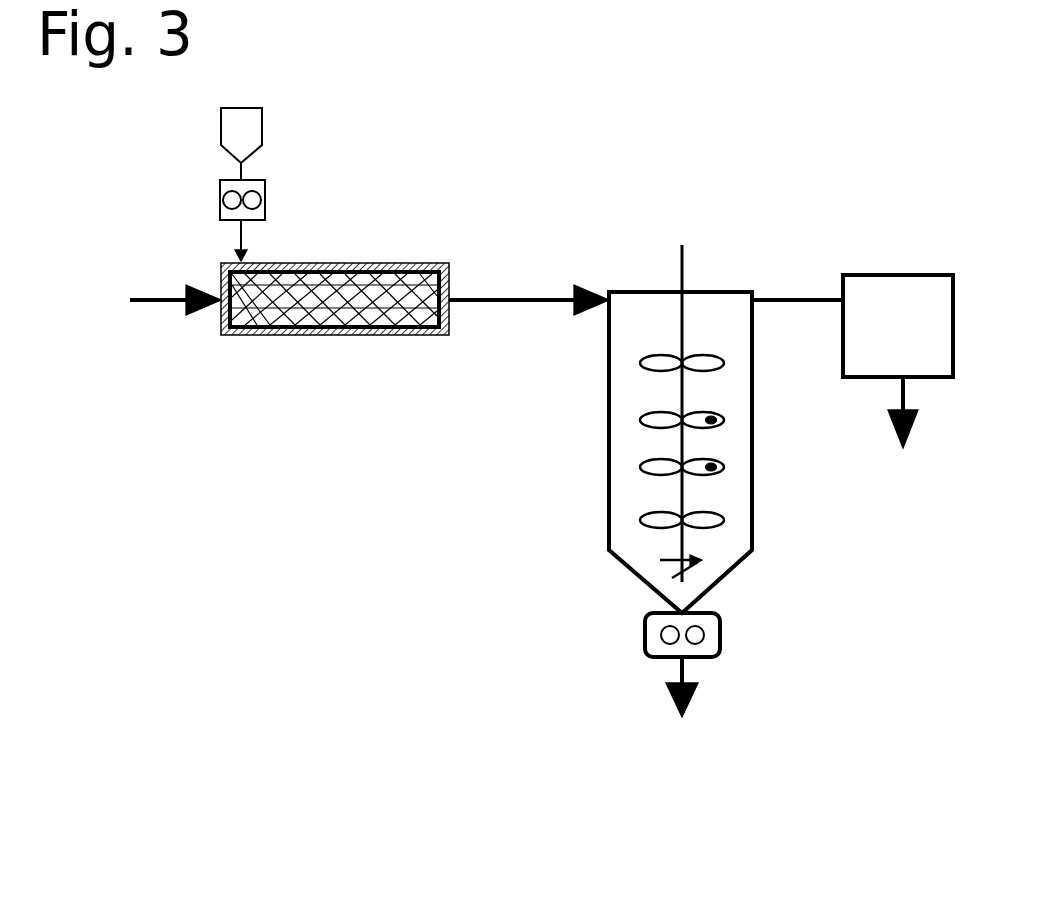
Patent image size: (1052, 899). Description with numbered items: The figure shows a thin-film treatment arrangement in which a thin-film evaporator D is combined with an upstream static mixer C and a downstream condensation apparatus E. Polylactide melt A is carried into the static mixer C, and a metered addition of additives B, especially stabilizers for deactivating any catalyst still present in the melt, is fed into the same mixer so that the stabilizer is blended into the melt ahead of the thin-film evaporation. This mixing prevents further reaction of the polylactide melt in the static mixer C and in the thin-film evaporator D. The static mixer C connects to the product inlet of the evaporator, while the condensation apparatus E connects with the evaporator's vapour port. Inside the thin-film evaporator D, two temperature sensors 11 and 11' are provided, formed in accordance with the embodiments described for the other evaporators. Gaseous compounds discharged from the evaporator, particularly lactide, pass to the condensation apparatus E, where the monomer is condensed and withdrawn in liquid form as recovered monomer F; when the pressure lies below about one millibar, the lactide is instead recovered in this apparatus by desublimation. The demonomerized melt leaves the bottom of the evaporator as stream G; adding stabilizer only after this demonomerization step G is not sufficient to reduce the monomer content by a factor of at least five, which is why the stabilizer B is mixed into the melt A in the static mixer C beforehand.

The polylactide melt A is at (150, 301).
The additives B is at (221, 180).
The static mixer C is at (373, 313).
The thin-film evaporator D is at (648, 322).
The condensation apparatus E is at (892, 290).
The recovered monomer F is at (901, 456).
The demonomerized melt G is at (682, 704).
The temperature sensor 11 is at (781, 455).
The temperature sensor 11' is at (784, 535).